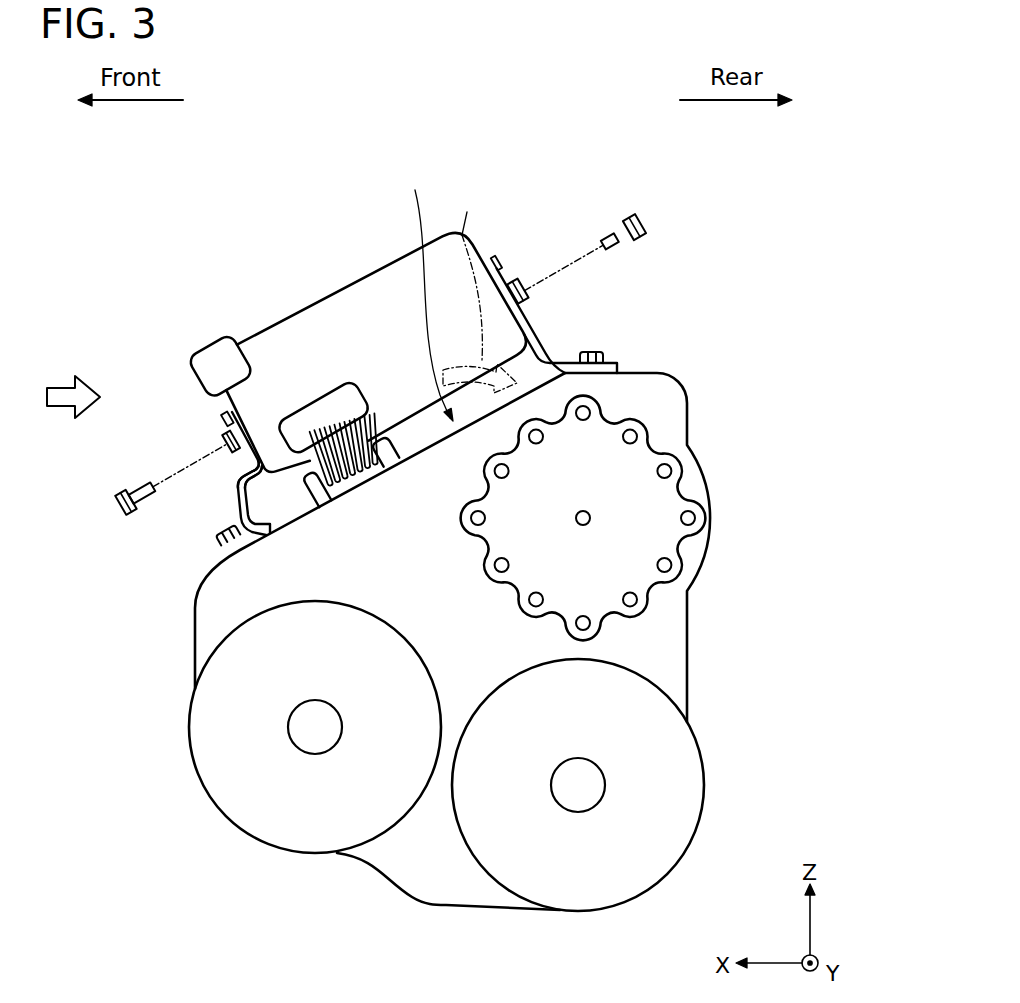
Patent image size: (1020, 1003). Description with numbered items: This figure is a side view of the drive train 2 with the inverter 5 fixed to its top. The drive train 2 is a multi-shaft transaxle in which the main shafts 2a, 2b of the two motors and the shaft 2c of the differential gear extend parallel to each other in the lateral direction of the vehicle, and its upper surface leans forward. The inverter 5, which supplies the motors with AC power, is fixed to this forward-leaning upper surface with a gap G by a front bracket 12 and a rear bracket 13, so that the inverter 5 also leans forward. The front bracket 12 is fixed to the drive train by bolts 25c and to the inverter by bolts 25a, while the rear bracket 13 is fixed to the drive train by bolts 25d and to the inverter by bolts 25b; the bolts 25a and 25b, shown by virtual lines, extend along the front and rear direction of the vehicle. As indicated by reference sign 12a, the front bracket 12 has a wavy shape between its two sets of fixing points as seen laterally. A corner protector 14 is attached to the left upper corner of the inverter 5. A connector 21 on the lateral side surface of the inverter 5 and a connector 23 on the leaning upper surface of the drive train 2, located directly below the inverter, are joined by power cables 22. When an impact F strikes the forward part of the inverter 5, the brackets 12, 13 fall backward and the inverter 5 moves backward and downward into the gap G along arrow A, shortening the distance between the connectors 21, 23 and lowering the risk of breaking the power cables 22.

The drive train 2 is at (437, 882).
The main shaft 2a is at (586, 517).
The main shaft 2b is at (581, 784).
The shaft of the differential gear 2c is at (315, 728).
The inverter 5 is at (262, 345).
The front bracket 12 is at (230, 413).
The wavy shape 12a is at (220, 509).
The rear bracket 13 is at (535, 340).
The corner protector 14 is at (222, 352).
The connector 21 is at (316, 415).
The power cables 22 is at (372, 447).
The connector 23 is at (410, 445).
The bolts 25a is at (227, 430).
The bolts 25b is at (620, 233).
The bolts 25c is at (226, 524).
The bolts 25d is at (592, 351).
The arrow A is at (480, 292).
The gap G is at (429, 294).
The impact F is at (65, 396).